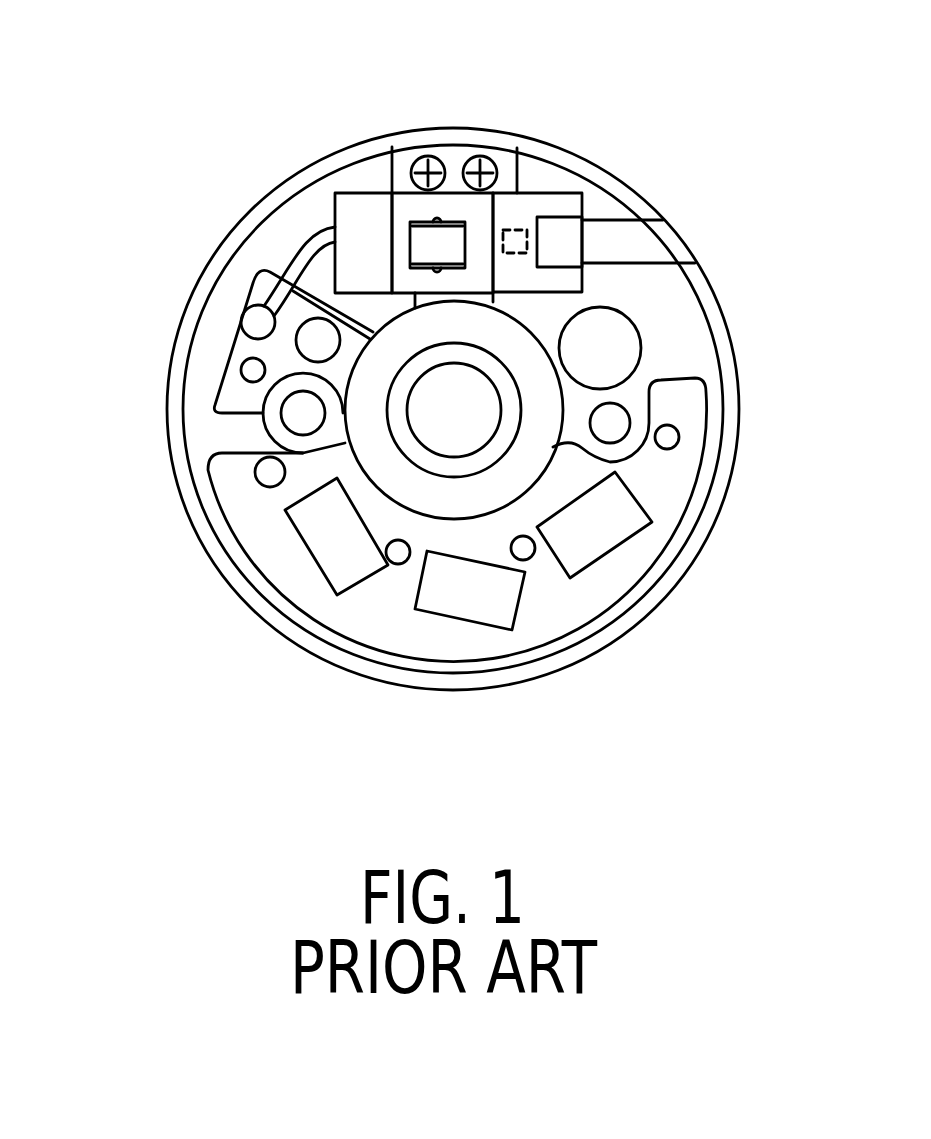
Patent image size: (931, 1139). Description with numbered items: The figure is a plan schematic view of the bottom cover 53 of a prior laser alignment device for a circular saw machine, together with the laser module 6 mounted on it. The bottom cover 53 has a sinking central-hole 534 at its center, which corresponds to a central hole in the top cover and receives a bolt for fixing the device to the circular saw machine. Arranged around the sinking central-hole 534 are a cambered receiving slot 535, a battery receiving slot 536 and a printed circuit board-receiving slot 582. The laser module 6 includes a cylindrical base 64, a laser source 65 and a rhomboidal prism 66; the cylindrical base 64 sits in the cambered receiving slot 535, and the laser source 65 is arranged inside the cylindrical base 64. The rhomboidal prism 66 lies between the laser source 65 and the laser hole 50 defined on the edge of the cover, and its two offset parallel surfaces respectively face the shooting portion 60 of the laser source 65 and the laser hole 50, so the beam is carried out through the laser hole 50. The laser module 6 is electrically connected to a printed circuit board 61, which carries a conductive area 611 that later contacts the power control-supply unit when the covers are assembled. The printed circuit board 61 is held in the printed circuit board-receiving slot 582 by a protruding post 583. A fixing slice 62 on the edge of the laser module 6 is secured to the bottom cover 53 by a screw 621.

The laser hole 50 is at (655, 243).
The bottom cover 53 is at (737, 437).
The sinking central-hole 534 is at (470, 422).
The cambered receiving slot 535 is at (545, 296).
The battery receiving slot 536 is at (595, 540).
The printed circuit board-receiving slot 582 is at (265, 273).
The protruding post 583 is at (248, 370).
The laser module 6 is at (549, 183).
The shooting portion 60 is at (547, 226).
The printed circuit board 61 is at (247, 348).
The conductive area 611 is at (313, 332).
The fixing slice 62 is at (398, 167).
The screw 621 is at (433, 167).
The cylindrical base 64 is at (358, 215).
The laser source 65 is at (520, 228).
The rhomboidal prism 66 is at (573, 238).